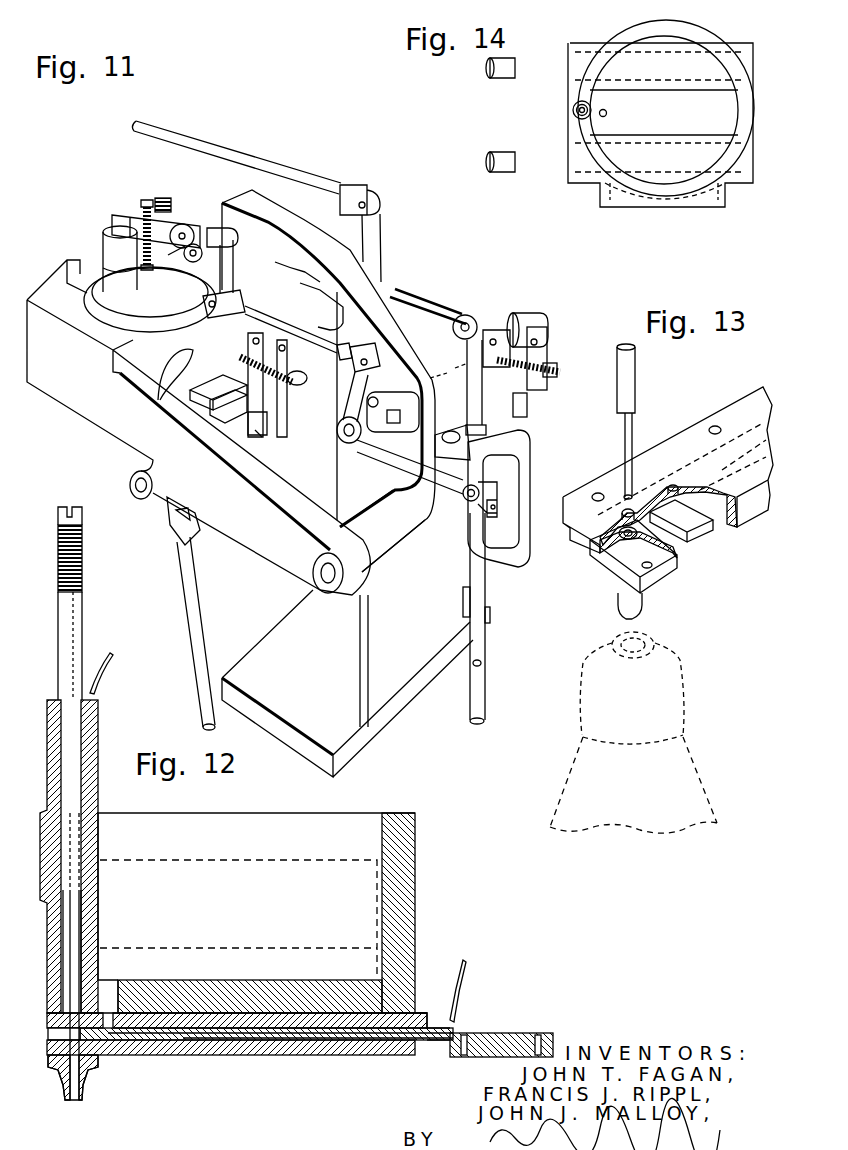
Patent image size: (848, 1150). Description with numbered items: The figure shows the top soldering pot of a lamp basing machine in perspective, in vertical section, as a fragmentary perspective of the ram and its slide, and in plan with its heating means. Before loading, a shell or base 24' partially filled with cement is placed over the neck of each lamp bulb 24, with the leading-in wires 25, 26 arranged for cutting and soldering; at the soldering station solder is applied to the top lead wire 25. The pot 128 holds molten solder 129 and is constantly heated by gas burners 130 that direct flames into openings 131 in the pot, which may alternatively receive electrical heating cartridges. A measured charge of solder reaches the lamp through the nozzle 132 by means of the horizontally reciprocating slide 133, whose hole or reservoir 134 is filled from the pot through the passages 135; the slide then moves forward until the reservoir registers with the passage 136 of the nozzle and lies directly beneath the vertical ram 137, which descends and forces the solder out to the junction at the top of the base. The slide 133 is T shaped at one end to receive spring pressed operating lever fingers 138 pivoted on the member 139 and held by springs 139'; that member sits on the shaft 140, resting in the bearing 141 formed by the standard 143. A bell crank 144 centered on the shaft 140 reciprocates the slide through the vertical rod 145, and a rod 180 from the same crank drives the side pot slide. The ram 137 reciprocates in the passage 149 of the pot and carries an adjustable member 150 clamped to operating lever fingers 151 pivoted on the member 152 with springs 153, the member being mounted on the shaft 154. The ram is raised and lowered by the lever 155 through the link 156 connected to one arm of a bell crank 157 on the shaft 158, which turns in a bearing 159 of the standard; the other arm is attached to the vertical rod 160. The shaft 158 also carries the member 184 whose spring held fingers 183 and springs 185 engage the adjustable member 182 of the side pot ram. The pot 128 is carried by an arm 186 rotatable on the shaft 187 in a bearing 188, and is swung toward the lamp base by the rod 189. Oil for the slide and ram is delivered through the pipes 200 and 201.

In FIG. 13, the lamp bulb 24 is at (638, 785).
In FIG. 13, the shell or base 24' is at (649, 693).
In FIG. 13, the top lead wire 25 is at (642, 641).
In FIG. 13, the leading-in wire 26 is at (583, 735).
In FIG. 11, the pot 128 is at (160, 323).
In FIG. 12, the pot 128 is at (416, 858).
In FIG. 14, the pot 128 is at (648, 202).
In FIG. 12, the molten solder 129 is at (326, 857).
In FIG. 14, the gas burners 130 is at (505, 147).
In FIG. 14, the openings 131 is at (575, 60).
In FIG. 12, the nozzle 132 is at (68, 1098).
In FIG. 13, the nozzle 132 is at (620, 616).
In FIG. 11, the slide 133 is at (220, 402).
In FIG. 12, the slide 133 is at (447, 1032).
In FIG. 13, the slide 133 is at (690, 525).
In FIG. 12, the hole or reservoir 134 is at (108, 1033).
In FIG. 13, the hole or reservoir 134 is at (722, 527).
In FIG. 12, the passages 135 is at (115, 993).
In FIG. 13, the passage 136 is at (600, 555).
In FIG. 12, the vertical ram 137 is at (81, 930).
In FIG. 13, the vertical ram 137 is at (633, 486).
In FIG. 11, the operating lever fingers 138 is at (283, 404).
In FIG. 11, the member 139 is at (287, 370).
In FIG. 11, the springs 139' is at (284, 436).
In FIG. 11, the shaft 140 is at (268, 327).
In FIG. 11, the bearing 141 is at (307, 291).
In FIG. 11, the standard 143 is at (334, 231).
In FIG. 11, the bell crank 144 is at (381, 260).
In FIG. 11, the vertical rod 145 is at (484, 421).
In FIG. 12, the passage 149 is at (62, 913).
In FIG. 14, the passage 149 is at (573, 110).
In FIG. 11, the adjustable member 150 is at (110, 222).
In FIG. 11, the operating lever fingers 151 is at (173, 210).
In FIG. 11, the member 152 is at (168, 238).
In FIG. 11, the springs 153 is at (148, 200).
In FIG. 11, the shaft 154 is at (190, 258).
In FIG. 11, the lever 155 is at (228, 270).
In FIG. 11, the link 156 is at (331, 347).
In FIG. 11, the bell crank 157 is at (364, 397).
In FIG. 11, the shaft 158 is at (340, 437).
In FIG. 11, the bearing 159 is at (386, 418).
In FIG. 11, the vertical rod 160 is at (486, 584).
In FIG. 11, the rod 180 is at (177, 138).
In FIG. 11, the adjustable member 182 is at (522, 400).
In FIG. 11, the operating lever fingers 183 is at (554, 356).
In FIG. 11, the member 184 is at (541, 340).
In FIG. 11, the springs 185 is at (562, 371).
In FIG. 11, the arm 186 is at (117, 435).
In FIG. 11, the shaft 187 is at (325, 580).
In FIG. 11, the bearing 188 is at (397, 543).
In FIG. 11, the rod 189 is at (190, 628).
In FIG. 12, the pipe 200 is at (98, 603).
In FIG. 12, the pipe 201 is at (474, 991).